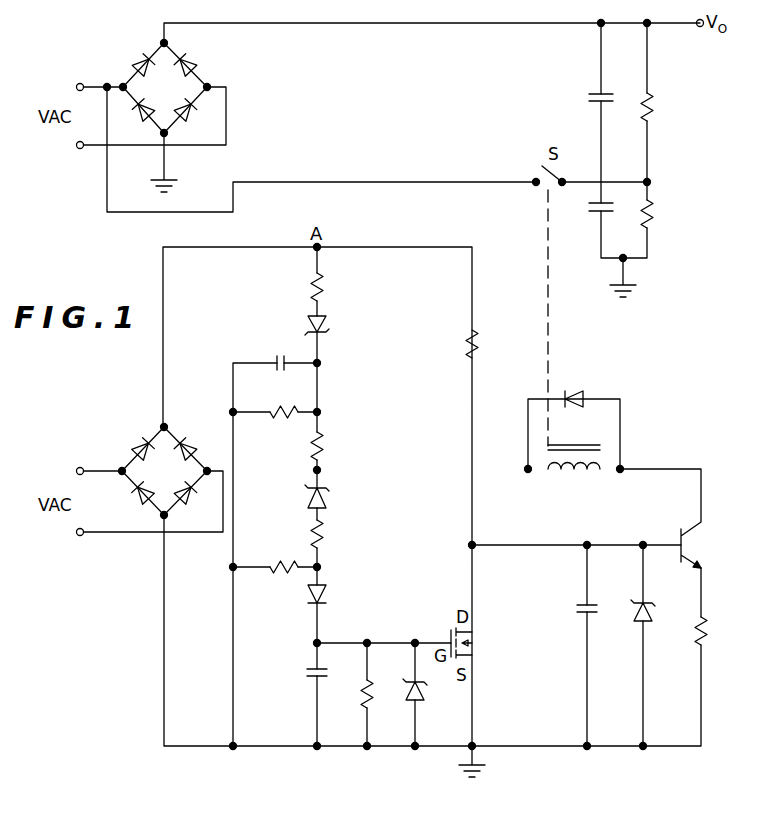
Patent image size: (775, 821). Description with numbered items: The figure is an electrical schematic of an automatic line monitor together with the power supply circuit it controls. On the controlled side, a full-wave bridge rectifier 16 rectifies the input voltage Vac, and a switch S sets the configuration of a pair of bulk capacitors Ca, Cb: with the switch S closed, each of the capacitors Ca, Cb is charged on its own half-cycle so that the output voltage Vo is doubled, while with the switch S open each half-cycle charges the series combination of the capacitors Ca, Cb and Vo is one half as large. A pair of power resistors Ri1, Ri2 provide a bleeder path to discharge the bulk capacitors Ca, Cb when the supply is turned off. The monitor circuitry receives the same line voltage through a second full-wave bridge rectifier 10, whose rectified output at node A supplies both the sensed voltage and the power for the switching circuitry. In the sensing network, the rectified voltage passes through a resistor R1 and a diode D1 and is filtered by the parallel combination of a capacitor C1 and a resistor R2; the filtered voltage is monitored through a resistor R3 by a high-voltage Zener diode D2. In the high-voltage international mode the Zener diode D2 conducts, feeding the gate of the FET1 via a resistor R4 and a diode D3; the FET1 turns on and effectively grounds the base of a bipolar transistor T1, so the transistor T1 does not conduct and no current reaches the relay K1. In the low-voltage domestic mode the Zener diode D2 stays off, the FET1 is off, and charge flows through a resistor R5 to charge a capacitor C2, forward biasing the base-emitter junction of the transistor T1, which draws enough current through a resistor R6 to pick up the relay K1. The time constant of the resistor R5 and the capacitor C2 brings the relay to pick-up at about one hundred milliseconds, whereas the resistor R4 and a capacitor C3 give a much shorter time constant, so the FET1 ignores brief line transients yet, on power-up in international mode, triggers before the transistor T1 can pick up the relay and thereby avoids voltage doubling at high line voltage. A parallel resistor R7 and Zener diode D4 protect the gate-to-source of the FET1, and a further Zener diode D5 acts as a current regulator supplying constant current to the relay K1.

The full-wave bridge rectifier 10 is at (150, 433).
The full-wave bridge rectifier 16 is at (178, 52).
The resistor R1 is at (331, 287).
The diode D1 is at (330, 327).
The capacitor C1 is at (281, 349).
The resistor R2 is at (284, 400).
The resistor R3 is at (301, 445).
The resistor R5 is at (486, 344).
The high-voltage Zener diode D2 is at (331, 497).
The resistor R4 is at (332, 535).
The diode D3 is at (298, 596).
The capacitor C3 is at (302, 673).
The resistor R7 is at (350, 694).
The Zener diode D4 is at (428, 693).
The FET FET1 is at (493, 643).
The relay K1 is at (574, 446).
The bipolar transistor T1 is at (660, 518).
The capacitor C2 is at (565, 607).
The Zener diode D5 is at (653, 626).
The resistor R6 is at (715, 631).
The bulk capacitor Ca is at (582, 102).
The bulk capacitor Cb is at (584, 212).
The power resistor Ri1 is at (667, 107).
The power resistor Ri2 is at (667, 214).